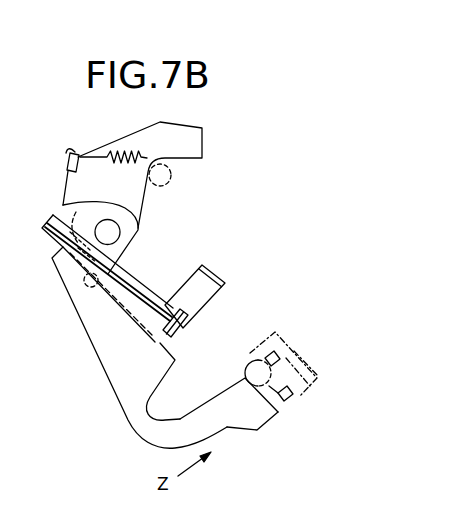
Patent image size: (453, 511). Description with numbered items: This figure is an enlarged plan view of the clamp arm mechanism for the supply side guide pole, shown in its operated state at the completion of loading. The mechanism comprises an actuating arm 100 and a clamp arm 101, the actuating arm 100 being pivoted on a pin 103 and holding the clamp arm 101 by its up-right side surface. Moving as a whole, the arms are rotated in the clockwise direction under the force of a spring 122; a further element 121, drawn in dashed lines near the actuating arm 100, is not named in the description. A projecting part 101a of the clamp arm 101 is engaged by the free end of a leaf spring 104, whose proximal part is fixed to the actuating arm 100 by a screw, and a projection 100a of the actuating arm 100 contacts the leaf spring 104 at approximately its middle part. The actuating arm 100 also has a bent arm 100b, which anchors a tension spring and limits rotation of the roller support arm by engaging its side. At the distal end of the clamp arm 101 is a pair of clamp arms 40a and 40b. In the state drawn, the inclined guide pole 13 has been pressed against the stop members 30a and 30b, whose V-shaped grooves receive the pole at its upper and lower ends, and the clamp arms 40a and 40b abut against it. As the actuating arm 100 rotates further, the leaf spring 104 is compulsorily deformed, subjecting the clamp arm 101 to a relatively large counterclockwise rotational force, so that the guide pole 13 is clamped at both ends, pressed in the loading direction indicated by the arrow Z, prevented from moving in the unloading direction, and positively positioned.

The actuating arm 100 is at (130, 137).
The projection 100a is at (157, 291).
The bent arm 100b is at (224, 277).
The clamp arm 101 is at (112, 375).
The projecting part 101a is at (183, 311).
The pin 103 is at (78, 220).
The leaf spring 104 is at (128, 282).
The stop pin 121 is at (173, 183).
The spring 122 is at (101, 142).
The inclined guide pole 13 is at (298, 402).
The stop member 30a is at (287, 353).
The stop member 30b is at (316, 406).
The clamp arm 40a is at (228, 393).
The clamp arm 40b is at (265, 421).